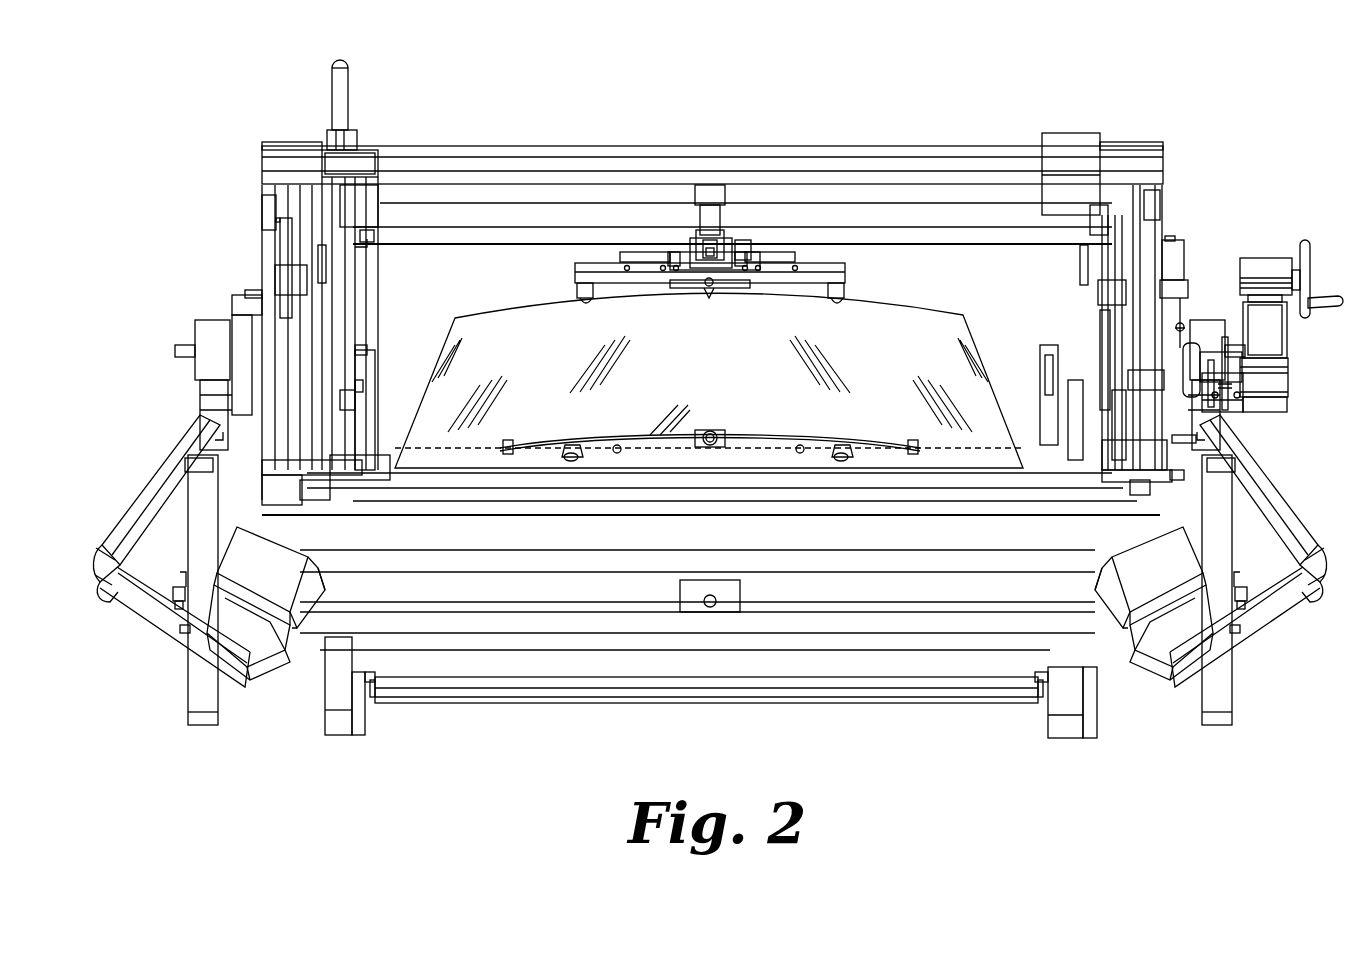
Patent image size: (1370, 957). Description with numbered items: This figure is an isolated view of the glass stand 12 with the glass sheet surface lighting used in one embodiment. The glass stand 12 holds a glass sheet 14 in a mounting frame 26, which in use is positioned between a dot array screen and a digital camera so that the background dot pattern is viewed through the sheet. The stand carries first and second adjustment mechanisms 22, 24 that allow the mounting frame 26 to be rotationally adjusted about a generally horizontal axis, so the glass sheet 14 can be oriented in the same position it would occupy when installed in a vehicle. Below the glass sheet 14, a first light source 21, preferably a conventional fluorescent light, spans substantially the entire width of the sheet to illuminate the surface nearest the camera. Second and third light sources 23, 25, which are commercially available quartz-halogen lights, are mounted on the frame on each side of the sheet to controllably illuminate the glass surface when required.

The glass stand 12 is at (197, 378).
The glass sheet 14 is at (724, 367).
The first light source 21 is at (693, 672).
The first adjustment mechanism 22 is at (243, 352).
The second light source 23 is at (303, 637).
The second adjustment mechanism 24 is at (1175, 357).
The third light source 25 is at (1160, 570).
The mounting frame 26 is at (970, 150).